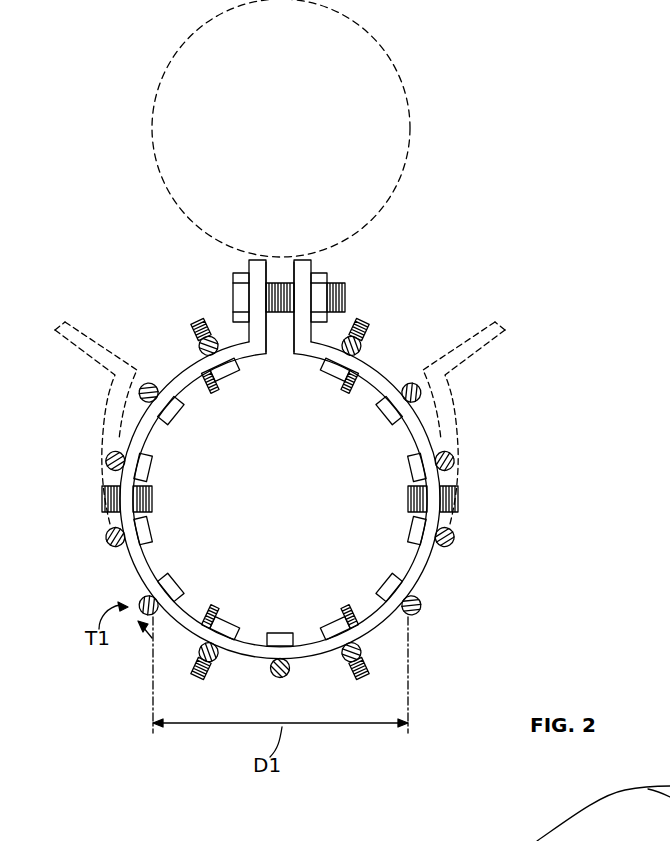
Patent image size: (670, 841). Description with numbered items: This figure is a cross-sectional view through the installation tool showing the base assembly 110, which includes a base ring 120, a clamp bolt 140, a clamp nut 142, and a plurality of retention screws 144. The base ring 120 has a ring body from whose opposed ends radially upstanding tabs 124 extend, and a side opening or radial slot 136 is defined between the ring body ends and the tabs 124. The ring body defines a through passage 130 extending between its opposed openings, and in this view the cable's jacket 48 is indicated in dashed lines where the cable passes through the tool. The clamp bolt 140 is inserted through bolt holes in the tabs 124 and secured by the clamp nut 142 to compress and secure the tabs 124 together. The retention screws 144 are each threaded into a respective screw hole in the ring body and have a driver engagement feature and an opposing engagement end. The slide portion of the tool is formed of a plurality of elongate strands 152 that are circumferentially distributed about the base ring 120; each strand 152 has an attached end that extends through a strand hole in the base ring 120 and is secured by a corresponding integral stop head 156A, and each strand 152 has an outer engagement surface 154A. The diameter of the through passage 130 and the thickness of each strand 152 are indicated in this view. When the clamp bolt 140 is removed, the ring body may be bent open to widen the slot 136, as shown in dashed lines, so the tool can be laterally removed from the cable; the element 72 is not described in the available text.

The jacket 48 is at (410, 124).
The base assembly 110 is at (311, 687).
The base ring 120 is at (247, 500).
The tabs 124 is at (258, 266).
The through passage 130 is at (297, 506).
The radial slot 136 is at (282, 349).
The clamp bolt 140 is at (238, 298).
The clamp nut 142 is at (320, 281).
The retention screws 144 is at (459, 495).
The strands 152 is at (106, 452).
The outer engagement surface 154A is at (456, 455).
The stop head 156A is at (178, 580).
The housing portion 72 is at (503, 839).